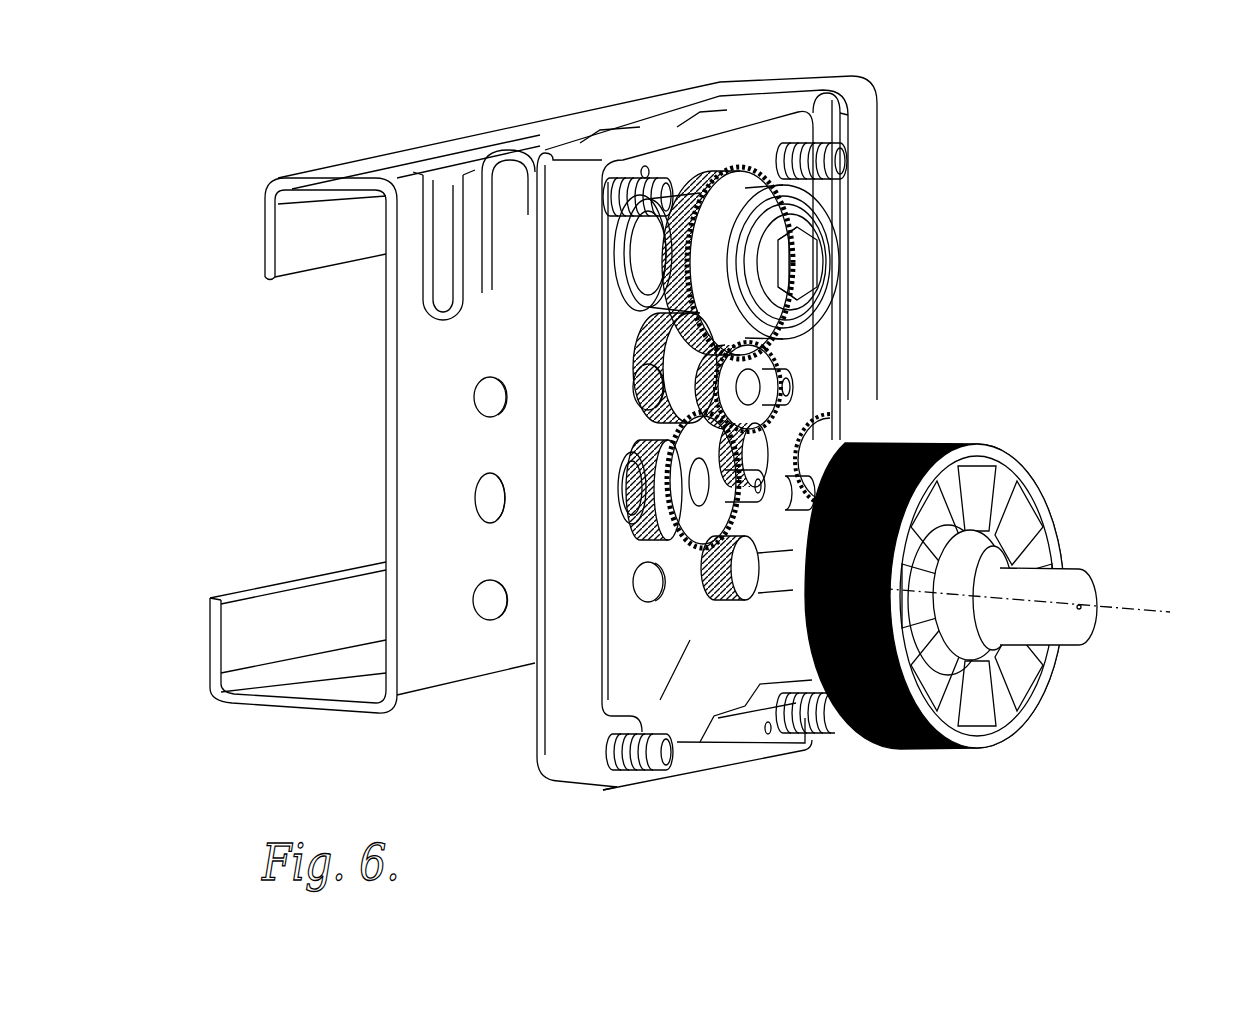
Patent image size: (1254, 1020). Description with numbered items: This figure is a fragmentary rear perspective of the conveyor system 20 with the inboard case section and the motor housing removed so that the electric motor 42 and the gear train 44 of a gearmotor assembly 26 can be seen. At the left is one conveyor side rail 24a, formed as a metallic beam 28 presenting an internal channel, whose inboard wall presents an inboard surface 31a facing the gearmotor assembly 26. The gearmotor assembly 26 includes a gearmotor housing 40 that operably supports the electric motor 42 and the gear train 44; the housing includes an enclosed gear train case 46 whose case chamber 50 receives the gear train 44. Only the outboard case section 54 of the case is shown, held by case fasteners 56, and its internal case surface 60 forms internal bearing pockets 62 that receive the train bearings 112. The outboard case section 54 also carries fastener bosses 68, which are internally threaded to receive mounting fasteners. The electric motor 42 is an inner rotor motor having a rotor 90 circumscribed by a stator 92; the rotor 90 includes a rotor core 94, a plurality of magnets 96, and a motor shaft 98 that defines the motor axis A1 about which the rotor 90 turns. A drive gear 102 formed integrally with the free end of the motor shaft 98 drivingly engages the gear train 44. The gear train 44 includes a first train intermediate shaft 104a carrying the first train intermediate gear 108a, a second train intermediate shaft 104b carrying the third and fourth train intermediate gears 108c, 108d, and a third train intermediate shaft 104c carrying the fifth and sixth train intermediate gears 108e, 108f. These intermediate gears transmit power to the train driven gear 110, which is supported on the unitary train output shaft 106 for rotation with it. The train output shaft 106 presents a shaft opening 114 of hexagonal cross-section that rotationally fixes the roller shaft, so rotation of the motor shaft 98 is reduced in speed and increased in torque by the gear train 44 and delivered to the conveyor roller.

The conveyor system 20 is at (160, 106).
The conveyor side rail 24a is at (245, 699).
The metallic beam 28 is at (330, 707).
The inboard surface 31a is at (413, 668).
The outboard case section 54 is at (571, 168).
The gearmotor assembly 26 is at (573, 735).
The gearmotor housing 40 is at (815, 332).
The gear train case 46 is at (836, 357).
The case chamber 50 is at (670, 713).
The case fasteners 56 is at (843, 160).
The internal case surfaces 60 is at (642, 689).
The internal bearing pockets 62 is at (678, 188).
The train bearings 112 is at (633, 251).
The gear train 44 is at (756, 176).
The train driven gear 110 is at (731, 196).
The train output shaft 106 is at (813, 244).
The shaft opening 114 is at (822, 280).
The first train intermediate gear 108a is at (818, 466).
The third train intermediate gear 108c is at (630, 486).
The fourth train intermediate gear 108d is at (642, 448).
The fifth train intermediate gear 108e is at (736, 364).
The sixth train intermediate gear 108f is at (700, 352).
The first train intermediate shaft 104a is at (800, 487).
The second train intermediate shaft 104b is at (744, 484).
The third train intermediate shaft 104c is at (792, 388).
The drive gear 102 is at (733, 598).
The motor shaft 98 is at (1057, 580).
The fastener bosses 68 is at (627, 385).
The electric motor 42 is at (961, 740).
The stator 92 is at (981, 450).
The magnets 96 is at (981, 526).
The rotor 90 is at (998, 533).
The rotor core 94 is at (962, 667).
The motor axis A1 is at (1032, 594).